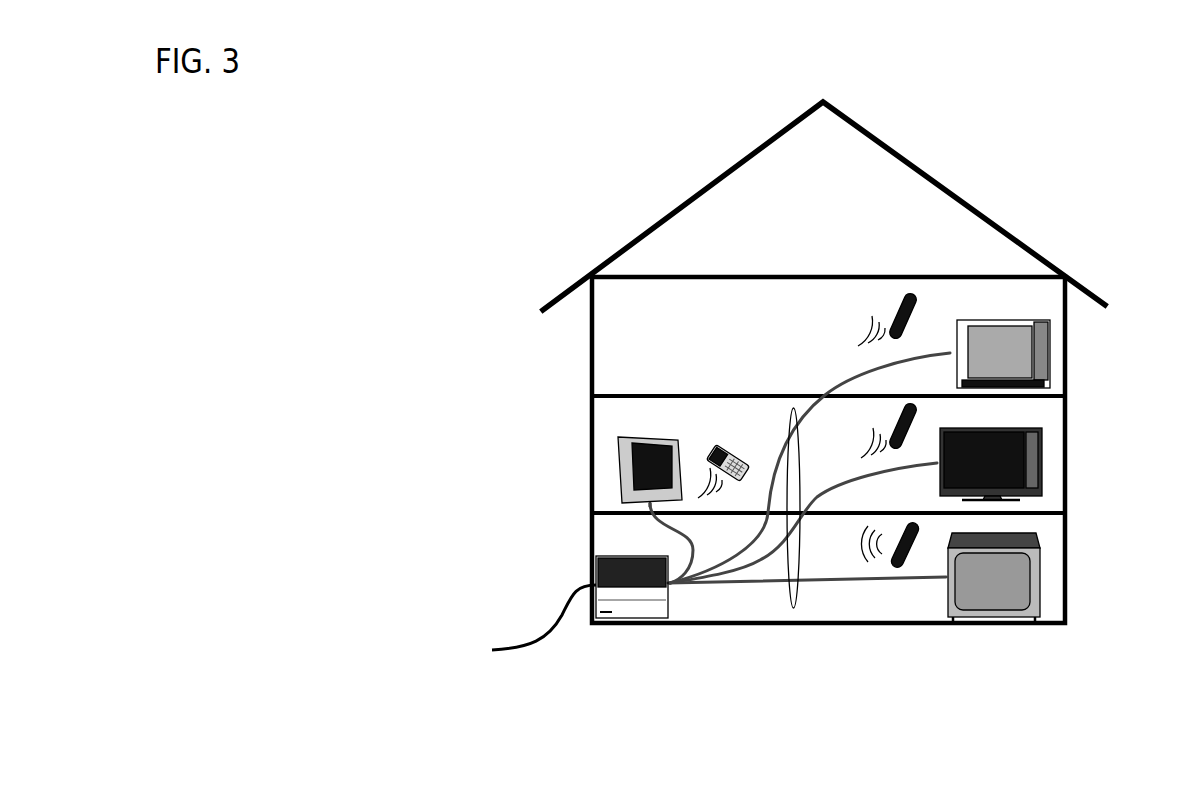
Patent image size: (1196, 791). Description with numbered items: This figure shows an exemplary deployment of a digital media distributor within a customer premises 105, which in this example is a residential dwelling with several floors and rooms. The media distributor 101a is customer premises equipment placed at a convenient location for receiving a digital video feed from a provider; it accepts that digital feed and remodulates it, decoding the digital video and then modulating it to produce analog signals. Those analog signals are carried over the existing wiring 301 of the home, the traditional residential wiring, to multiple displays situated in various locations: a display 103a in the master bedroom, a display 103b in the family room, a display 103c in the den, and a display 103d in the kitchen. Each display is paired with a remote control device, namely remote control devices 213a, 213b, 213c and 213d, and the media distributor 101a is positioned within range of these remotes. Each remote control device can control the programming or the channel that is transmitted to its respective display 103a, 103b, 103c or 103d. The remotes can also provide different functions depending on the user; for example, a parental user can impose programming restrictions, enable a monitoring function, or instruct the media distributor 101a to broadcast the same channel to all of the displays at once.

The customer premises 105 is at (1002, 178).
The media distributor 101a is at (625, 618).
The display 103a is at (1047, 347).
The display 103b is at (1045, 455).
The display 103c is at (1040, 565).
The display 103d is at (617, 473).
The remote control device 213a is at (882, 317).
The remote control device 213b is at (890, 428).
The remote control device 213c is at (902, 567).
The remote control device 213d is at (742, 456).
The existing wiring 301 is at (794, 608).